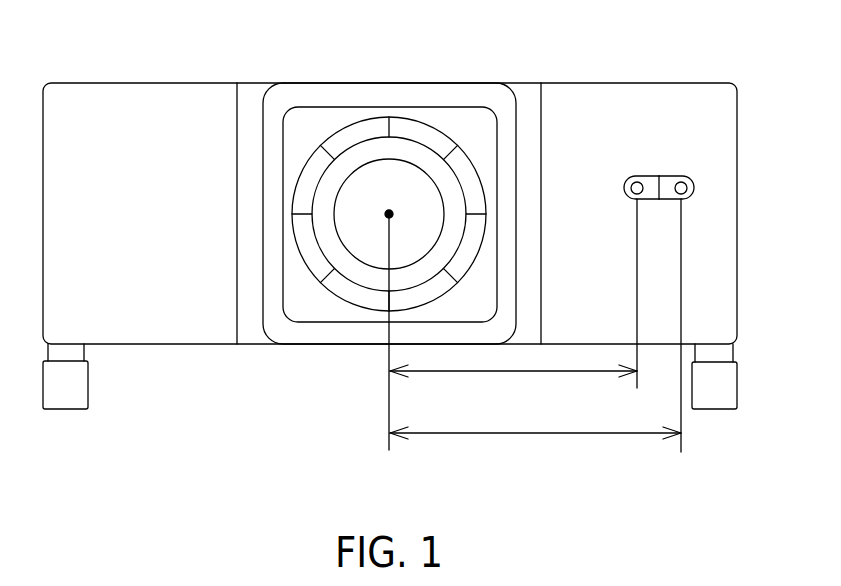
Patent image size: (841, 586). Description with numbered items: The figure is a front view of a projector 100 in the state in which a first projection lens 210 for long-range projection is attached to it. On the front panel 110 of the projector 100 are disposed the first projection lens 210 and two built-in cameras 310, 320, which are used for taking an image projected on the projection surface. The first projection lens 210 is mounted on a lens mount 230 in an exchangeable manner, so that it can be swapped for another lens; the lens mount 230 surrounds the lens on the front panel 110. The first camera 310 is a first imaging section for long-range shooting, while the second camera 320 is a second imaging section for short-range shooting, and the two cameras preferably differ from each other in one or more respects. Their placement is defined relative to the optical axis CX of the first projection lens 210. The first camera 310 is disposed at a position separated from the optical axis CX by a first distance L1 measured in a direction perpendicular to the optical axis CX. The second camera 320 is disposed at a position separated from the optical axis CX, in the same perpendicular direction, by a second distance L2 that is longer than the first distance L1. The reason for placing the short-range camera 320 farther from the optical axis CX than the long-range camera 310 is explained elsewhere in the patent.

The projector 100 is at (642, 43).
The front panel 110 is at (130, 98).
The first projection lens 210 is at (417, 138).
The lens mount 230 is at (472, 152).
The first camera 310 is at (641, 176).
The second camera 320 is at (682, 176).
The optical axis CX is at (385, 212).
The first distance L1 is at (513, 382).
The second distance L2 is at (535, 444).